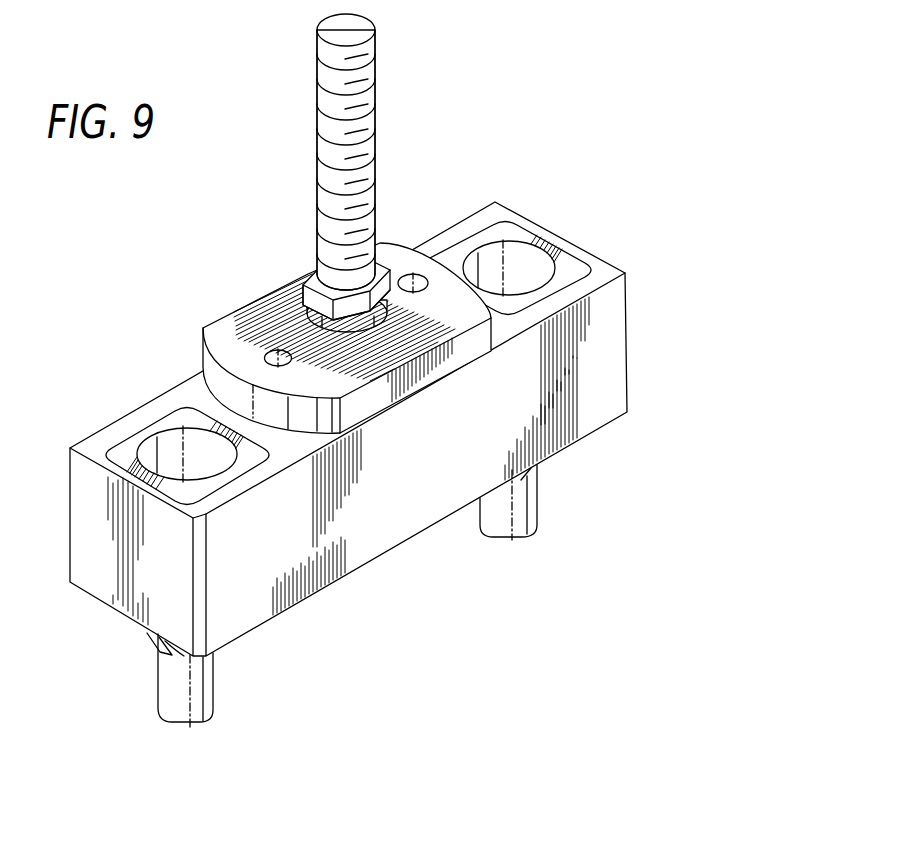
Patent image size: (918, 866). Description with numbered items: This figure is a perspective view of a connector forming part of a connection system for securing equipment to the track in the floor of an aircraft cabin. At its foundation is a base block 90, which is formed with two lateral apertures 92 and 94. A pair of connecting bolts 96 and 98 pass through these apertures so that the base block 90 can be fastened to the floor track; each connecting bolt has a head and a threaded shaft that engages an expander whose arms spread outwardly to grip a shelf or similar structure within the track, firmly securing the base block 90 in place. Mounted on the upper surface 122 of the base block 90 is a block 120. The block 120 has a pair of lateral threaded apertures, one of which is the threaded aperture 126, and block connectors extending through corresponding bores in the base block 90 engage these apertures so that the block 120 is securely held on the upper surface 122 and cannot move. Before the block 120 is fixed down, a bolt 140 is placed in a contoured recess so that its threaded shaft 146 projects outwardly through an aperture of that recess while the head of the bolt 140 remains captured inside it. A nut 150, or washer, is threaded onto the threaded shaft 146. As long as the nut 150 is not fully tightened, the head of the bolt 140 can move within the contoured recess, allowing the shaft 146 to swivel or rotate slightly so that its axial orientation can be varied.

The base block 90 is at (378, 547).
The lateral aperture 92 is at (163, 441).
The lateral aperture 94 is at (527, 260).
The connecting bolt 96 is at (177, 720).
The connecting bolt 98 is at (518, 517).
The block 120 is at (446, 282).
The upper surface 122 is at (188, 385).
The lateral threaded aperture 126 is at (263, 353).
The bolt 140 is at (316, 79).
The threaded shaft 146 is at (355, 121).
The nut 150 is at (313, 298).